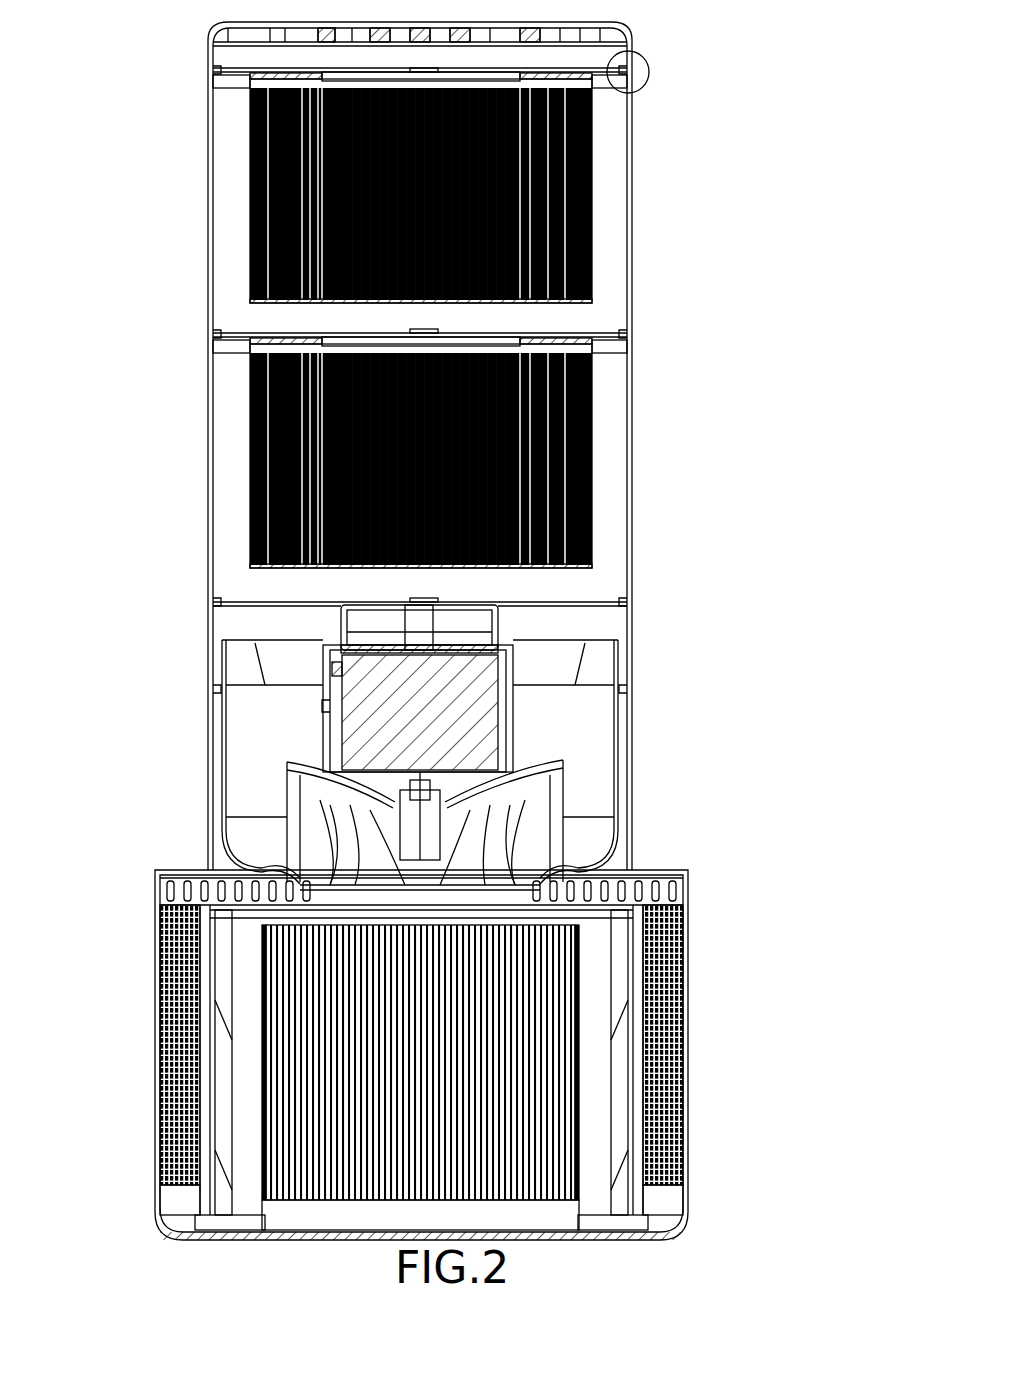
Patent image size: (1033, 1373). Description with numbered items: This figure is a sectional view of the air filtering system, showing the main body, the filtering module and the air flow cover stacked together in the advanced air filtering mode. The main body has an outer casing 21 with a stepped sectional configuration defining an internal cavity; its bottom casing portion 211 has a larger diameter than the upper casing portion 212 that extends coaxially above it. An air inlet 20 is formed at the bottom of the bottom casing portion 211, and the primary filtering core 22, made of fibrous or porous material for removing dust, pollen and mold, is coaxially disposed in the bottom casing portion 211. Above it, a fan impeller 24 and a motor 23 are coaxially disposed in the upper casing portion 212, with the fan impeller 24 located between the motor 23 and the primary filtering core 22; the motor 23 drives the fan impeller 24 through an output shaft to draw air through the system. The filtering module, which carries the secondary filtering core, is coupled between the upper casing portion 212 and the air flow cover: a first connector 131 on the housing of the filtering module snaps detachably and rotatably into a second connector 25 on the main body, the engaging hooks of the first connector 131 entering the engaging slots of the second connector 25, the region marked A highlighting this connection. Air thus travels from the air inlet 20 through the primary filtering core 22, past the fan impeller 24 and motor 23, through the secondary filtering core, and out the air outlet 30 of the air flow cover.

The air outlet 30 is at (595, 30).
The detail circle A is at (656, 72).
The first connector 131 is at (628, 335).
The second connector 25 is at (628, 609).
The motor 23 is at (430, 710).
The upper casing portion 212 is at (208, 770).
The fan impeller 24 is at (490, 834).
The bottom casing portion 211 is at (155, 1047).
The outer casing 21 is at (688, 1043).
The primary filtering core 22 is at (510, 1100).
The air inlet 20 is at (665, 1237).